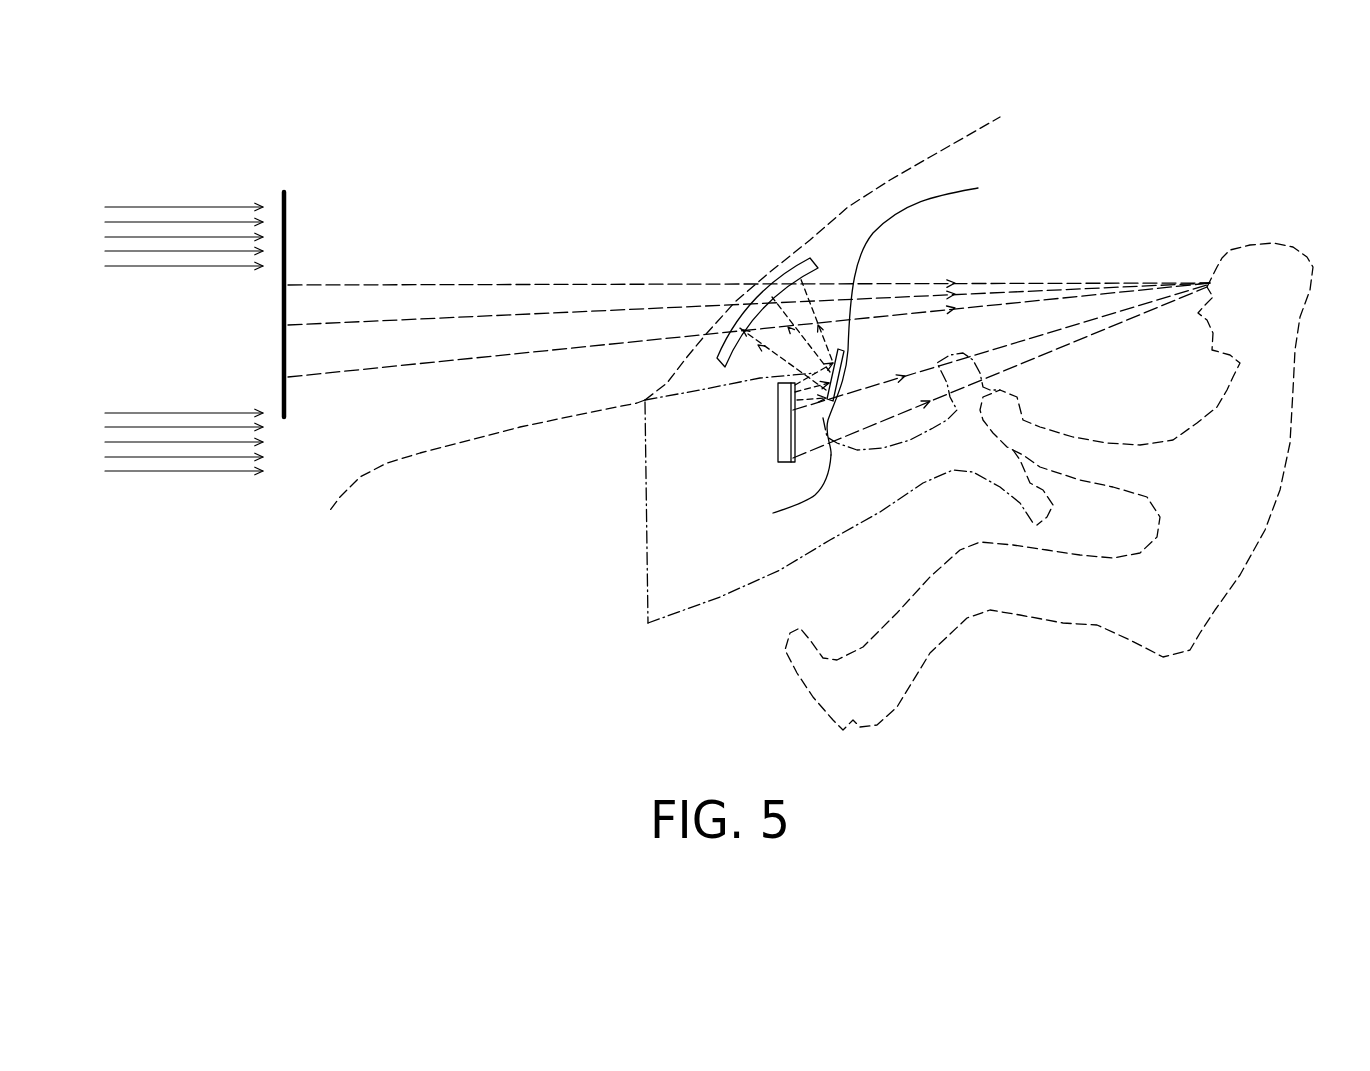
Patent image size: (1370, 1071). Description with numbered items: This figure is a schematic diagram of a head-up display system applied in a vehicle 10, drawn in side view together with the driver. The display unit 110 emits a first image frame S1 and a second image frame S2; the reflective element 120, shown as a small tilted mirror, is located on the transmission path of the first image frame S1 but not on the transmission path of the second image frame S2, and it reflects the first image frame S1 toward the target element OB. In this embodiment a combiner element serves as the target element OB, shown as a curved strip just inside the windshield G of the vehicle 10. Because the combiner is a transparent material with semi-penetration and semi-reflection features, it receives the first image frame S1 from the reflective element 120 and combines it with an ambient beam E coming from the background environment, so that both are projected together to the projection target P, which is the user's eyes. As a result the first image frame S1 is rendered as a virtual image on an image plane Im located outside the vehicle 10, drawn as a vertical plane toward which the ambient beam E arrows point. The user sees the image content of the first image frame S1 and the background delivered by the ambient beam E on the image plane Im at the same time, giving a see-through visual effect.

The vehicle 10 is at (1010, 76).
The display unit 110 is at (778, 412).
The reflective element 120 is at (843, 370).
The target element OB is at (716, 363).
The windshield G is at (848, 207).
The image plane Im is at (281, 280).
The ambient beam E is at (168, 339).
The projection target P is at (1210, 281).
The first image frame S1 is at (978, 283).
The second image frame S2 is at (789, 492).